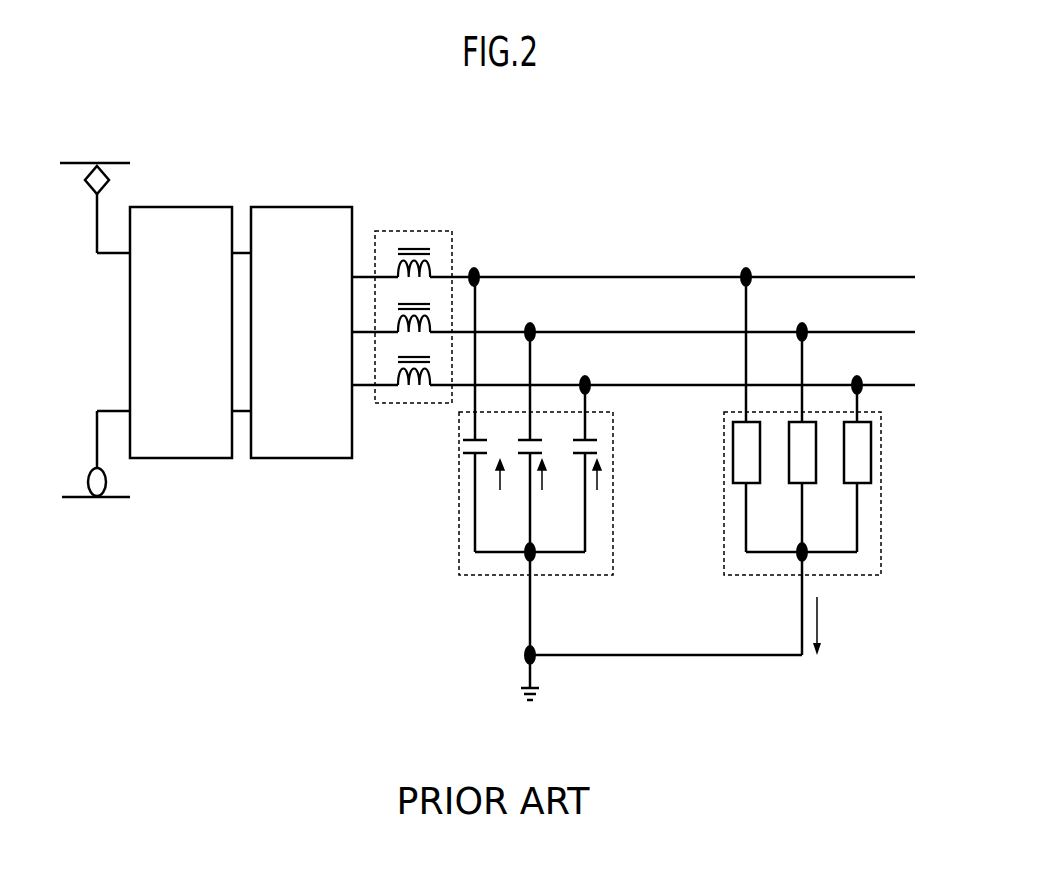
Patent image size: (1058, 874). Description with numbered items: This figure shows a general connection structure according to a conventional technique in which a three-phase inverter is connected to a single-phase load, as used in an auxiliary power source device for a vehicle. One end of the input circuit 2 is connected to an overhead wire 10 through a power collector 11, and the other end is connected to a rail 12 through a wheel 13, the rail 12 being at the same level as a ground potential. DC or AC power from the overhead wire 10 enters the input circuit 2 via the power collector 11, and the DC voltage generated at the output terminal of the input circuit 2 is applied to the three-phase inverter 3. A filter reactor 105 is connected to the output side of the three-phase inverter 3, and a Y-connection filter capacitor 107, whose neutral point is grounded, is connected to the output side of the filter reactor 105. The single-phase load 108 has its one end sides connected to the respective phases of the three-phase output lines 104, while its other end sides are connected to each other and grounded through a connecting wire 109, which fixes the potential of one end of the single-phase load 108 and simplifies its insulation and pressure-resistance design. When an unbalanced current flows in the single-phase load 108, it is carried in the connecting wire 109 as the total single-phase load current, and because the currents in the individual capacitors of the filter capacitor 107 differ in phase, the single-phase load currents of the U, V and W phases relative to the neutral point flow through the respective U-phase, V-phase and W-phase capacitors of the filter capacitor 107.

The input circuit 2 is at (194, 192).
The three-phase inverter 3 is at (313, 192).
The overhead wire 10 is at (78, 164).
The power collector 11 is at (88, 187).
The rail 12 is at (80, 498).
The wheel 13 is at (90, 468).
The three-phase output lines 104 is at (662, 407).
The filter reactor 105 is at (413, 226).
The Y-connection filter capacitor 107 is at (508, 578).
The single-phase load 108 is at (781, 578).
The connecting wire 109 is at (678, 657).